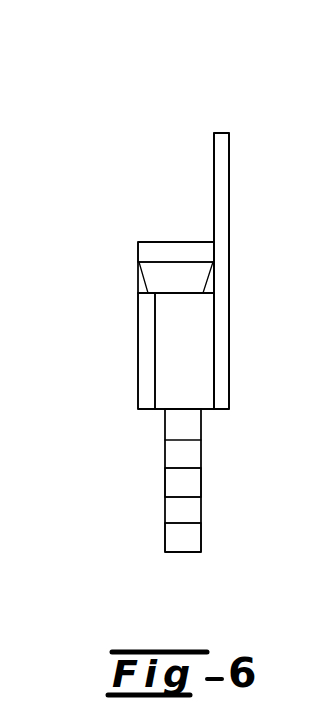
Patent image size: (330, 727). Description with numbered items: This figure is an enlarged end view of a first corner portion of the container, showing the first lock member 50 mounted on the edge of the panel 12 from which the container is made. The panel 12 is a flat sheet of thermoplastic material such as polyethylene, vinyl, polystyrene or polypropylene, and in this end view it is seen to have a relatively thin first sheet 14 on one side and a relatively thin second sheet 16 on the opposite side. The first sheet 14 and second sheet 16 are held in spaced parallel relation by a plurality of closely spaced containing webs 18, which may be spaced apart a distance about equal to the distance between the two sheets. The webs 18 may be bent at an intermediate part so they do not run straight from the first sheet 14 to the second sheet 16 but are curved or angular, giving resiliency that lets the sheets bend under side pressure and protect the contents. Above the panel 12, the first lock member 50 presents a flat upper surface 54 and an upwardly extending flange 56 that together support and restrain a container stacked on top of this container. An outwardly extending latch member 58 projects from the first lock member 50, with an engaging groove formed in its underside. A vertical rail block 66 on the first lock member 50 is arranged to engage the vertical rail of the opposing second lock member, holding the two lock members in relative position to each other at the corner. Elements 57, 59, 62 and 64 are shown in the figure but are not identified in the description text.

The first lock member 50 is at (180, 100).
The rod upper end 57 is at (223, 132).
The upwardly extending flange 56 is at (214, 148).
The rod lower portion 59 is at (222, 205).
The flat upper surface 54 is at (176, 243).
The outwardly extending latch member 58 is at (140, 249).
The tapered recess 62 is at (176, 280).
The body portion 64 is at (188, 340).
The vertical rail block 66 is at (146, 386).
The panel 12 is at (132, 518).
The second sheet 16 is at (203, 512).
The containing webs 18 is at (182, 496).
The first sheet 14 is at (162, 540).